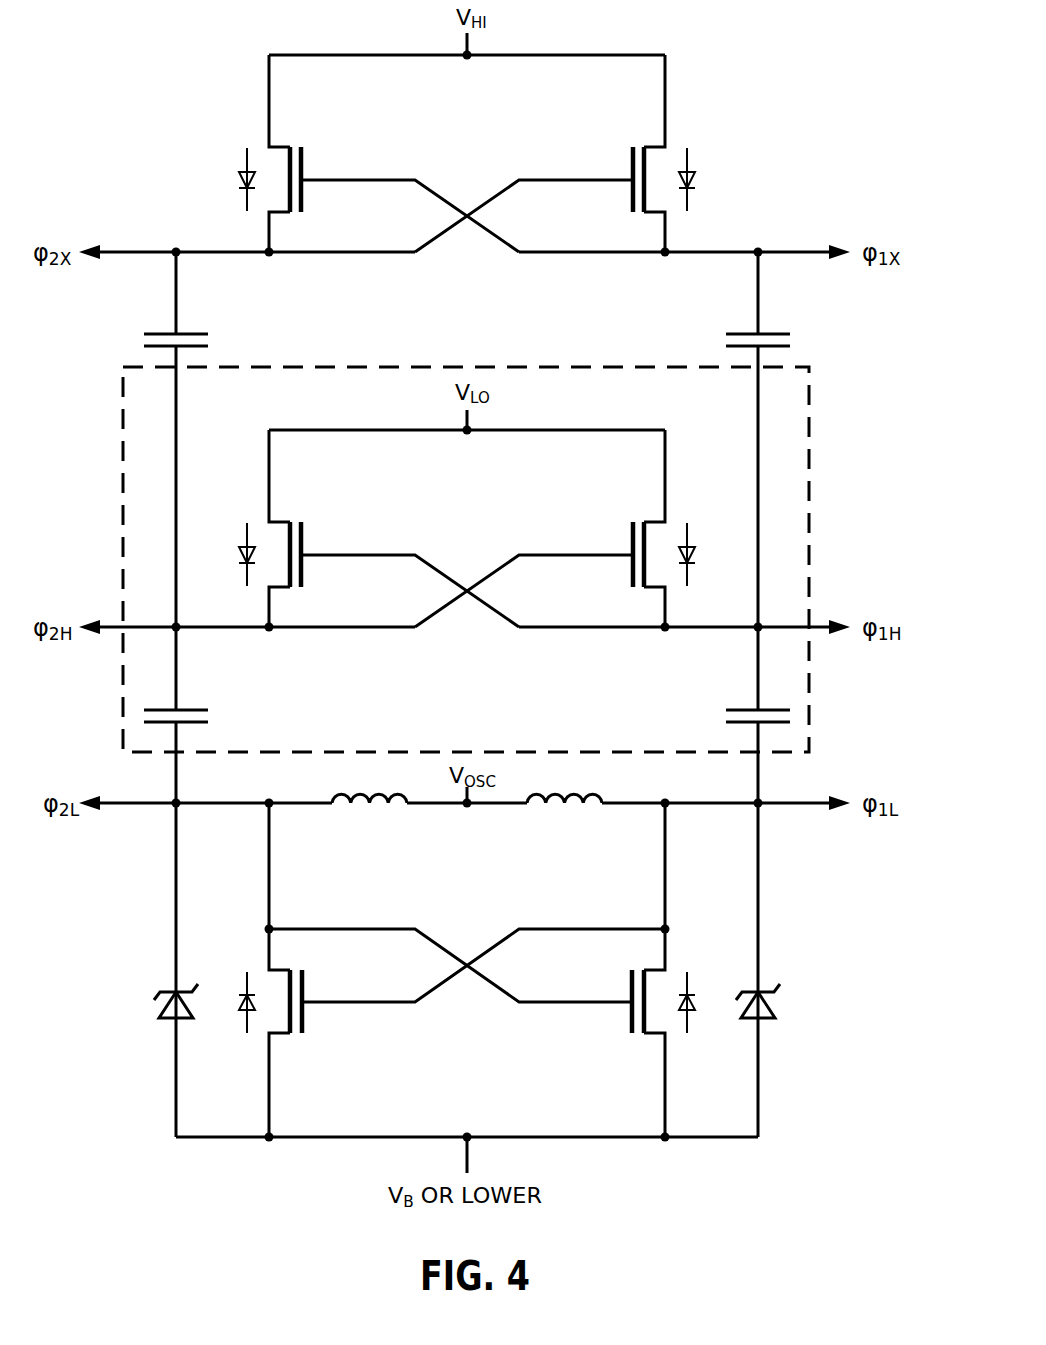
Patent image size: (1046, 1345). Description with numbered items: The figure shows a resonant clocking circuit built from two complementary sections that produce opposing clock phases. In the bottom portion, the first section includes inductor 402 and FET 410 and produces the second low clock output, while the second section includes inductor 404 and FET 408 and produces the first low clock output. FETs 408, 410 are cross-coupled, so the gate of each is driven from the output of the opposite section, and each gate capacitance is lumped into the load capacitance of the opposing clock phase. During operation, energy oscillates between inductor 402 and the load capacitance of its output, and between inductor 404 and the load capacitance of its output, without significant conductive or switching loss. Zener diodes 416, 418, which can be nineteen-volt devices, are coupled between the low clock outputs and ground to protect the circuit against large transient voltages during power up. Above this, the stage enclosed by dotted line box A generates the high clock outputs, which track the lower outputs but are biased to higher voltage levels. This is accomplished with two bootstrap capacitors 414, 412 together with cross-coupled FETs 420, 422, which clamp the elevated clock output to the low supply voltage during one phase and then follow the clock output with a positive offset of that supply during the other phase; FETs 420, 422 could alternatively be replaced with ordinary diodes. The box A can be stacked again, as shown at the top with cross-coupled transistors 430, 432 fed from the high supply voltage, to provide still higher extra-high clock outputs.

The inductor 402 is at (369, 783).
The inductor 404 is at (564, 783).
The FET 408 is at (482, 970).
The FET 410 is at (452, 970).
The bootstrap capacitor CB2 412 is at (199, 715).
The bootstrap capacitor CB1 414 is at (738, 715).
The Zener diode 416 is at (187, 694).
The Zener diode 418 is at (756, 694).
The FET 420 is at (555, 528).
The FET 422 is at (379, 528).
The PMOS transistor 430 is at (555, 153).
The PMOS transistor 432 is at (379, 153).
The dotted line box A is at (790, 367).